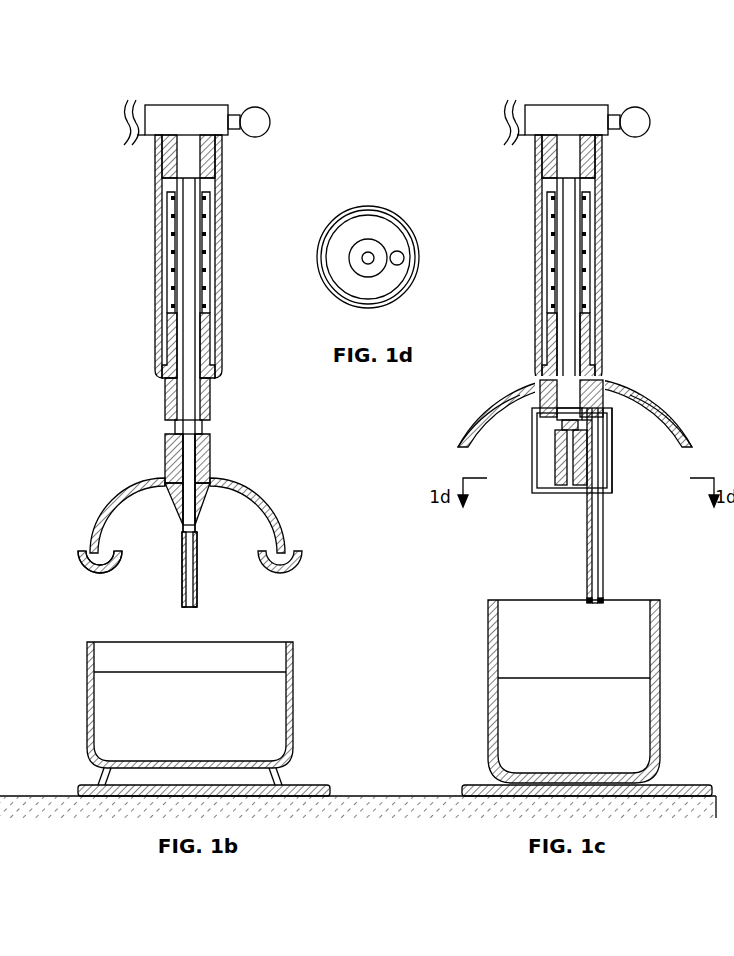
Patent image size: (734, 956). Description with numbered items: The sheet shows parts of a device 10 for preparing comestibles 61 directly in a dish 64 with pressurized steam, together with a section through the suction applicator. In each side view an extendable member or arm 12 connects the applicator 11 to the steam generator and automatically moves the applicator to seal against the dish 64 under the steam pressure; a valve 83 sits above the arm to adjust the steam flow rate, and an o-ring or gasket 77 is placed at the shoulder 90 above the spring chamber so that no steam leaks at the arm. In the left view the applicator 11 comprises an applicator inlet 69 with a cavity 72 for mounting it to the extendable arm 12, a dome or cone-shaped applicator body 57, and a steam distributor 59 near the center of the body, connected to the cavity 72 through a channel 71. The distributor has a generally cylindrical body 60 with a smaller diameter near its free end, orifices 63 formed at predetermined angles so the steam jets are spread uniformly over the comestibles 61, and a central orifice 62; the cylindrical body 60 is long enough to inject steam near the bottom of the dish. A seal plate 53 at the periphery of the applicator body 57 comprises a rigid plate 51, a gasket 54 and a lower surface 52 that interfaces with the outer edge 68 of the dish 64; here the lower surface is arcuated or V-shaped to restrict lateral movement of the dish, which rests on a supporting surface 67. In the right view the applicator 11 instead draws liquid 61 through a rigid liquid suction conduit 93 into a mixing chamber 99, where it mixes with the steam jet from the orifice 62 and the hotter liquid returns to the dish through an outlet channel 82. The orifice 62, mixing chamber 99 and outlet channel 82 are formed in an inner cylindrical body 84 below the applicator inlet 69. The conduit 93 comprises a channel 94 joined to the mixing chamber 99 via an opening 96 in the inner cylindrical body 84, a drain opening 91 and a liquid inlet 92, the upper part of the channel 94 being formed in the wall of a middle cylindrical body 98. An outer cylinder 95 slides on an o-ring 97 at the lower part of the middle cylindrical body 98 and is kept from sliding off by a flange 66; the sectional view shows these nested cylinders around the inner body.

In FIG. 1b, the device 10 is at (160, 96).
In FIG. 1c, the device 10 is at (562, 102).
In FIG. 1b, the valve 83 is at (255, 107).
In FIG. 1c, the valve 83 is at (635, 100).
In FIG. 1b, the extendable member or arm 12 is at (234, 333).
In FIG. 1c, the extendable member or arm 12 is at (603, 271).
In FIG. 1b, the o-ring or gasket 77 is at (168, 317).
In FIG. 1c, the o-ring or gasket 77 is at (548, 254).
In FIG. 1b, the shoulder 90 is at (167, 325).
In FIG. 1c, the shoulder 90 is at (595, 346).
In FIG. 1b, the applicator inlet 69 is at (168, 445).
In FIG. 1c, the applicator inlet 69 is at (543, 389).
In FIG. 1b, the channel 71 is at (190, 462).
In FIG. 1b, the steam distributor 59 is at (150, 483).
In FIG. 1b, the applicator body 57 is at (118, 506).
In FIG. 1c, the applicator body 57 is at (481, 406).
In FIG. 1b, the applicator 11 is at (260, 484).
In FIG. 1c, the applicator 11 is at (664, 386).
In FIG. 1b, the seal plate 53 is at (76, 545).
In FIG. 1b, the rigid plate 51 is at (115, 551).
In FIG. 1b, the orifices 63 is at (200, 518).
In FIG. 1b, the generally cylindrical body 60 is at (183, 546).
In FIG. 1b, the lower surface 52 is at (106, 563).
In FIG. 1b, the gasket 54 is at (117, 571).
In FIG. 1b, the central orifice 62 is at (192, 606).
In FIG. 1c, the central orifice 62 is at (556, 422).
In FIG. 1b, the outer edge 68 is at (291, 641).
In FIG. 1c, the outer edge 68 is at (490, 601).
In FIG. 1b, the comestibles 61 is at (142, 715).
In FIG. 1c, the comestibles 61 is at (540, 734).
In FIG. 1b, the dish 64 is at (296, 748).
In FIG. 1c, the dish 64 is at (656, 760).
In FIG. 1b, the support surface 67 is at (13, 808).
In FIG. 1c, the flange 66 is at (512, 394).
In FIG. 1c, the cavity 72 is at (590, 410).
In FIG. 1c, the opening 96 is at (598, 428).
In FIG. 1c, the mixing chamber 99 is at (561, 431).
In FIG. 1d, the inner cylindrical body 84 is at (372, 268).
In FIG. 1c, the inner cylindrical body 84 is at (593, 458).
In FIG. 1d, the middle cylindrical body 98 is at (378, 297).
In FIG. 1c, the middle cylindrical body 98 is at (550, 462).
In FIG. 1d, the outer cylinder 95 is at (399, 214).
In FIG. 1c, the outer cylinder 95 is at (611, 471).
In FIG. 1d, the outlet channel 82 is at (368, 255).
In FIG. 1c, the outlet channel 82 is at (572, 480).
In FIG. 1d, the o-ring 97 is at (405, 239).
In FIG. 1c, the o-ring 97 is at (613, 491).
In FIG. 1d, the channel 94 is at (405, 258).
In FIG. 1c, the channel 94 is at (594, 527).
In FIG. 1c, the rigid liquid suction conduit 93 is at (605, 546).
In FIG. 1c, the liquid inlet 92 is at (604, 583).
In FIG. 1c, the drain opening 91 is at (597, 606).